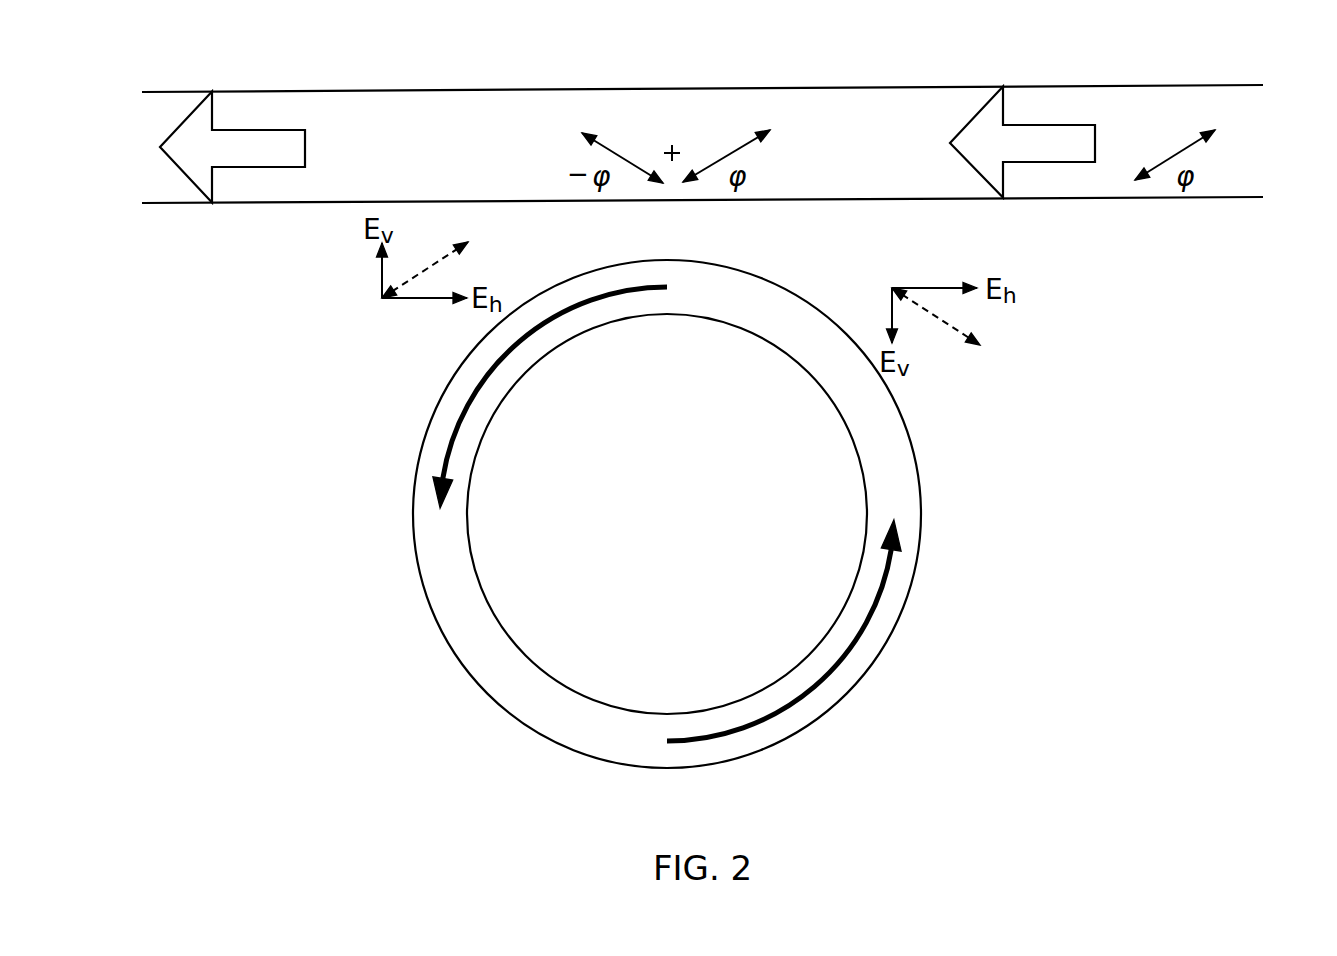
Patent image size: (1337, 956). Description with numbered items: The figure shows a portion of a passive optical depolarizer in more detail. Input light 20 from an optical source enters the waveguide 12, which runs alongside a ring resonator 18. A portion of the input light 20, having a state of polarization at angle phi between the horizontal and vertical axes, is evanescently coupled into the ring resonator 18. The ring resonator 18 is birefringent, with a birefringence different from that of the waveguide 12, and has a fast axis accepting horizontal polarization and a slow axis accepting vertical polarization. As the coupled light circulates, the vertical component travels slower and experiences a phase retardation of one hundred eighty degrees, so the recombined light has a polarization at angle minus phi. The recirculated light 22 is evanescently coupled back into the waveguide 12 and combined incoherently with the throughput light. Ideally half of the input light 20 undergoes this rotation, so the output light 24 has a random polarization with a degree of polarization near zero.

The waveguide 12 is at (1245, 107).
The ring resonator 18 is at (892, 433).
The input light 20 is at (1090, 133).
The recirculated light 22 is at (452, 433).
The output light 24 is at (300, 138).